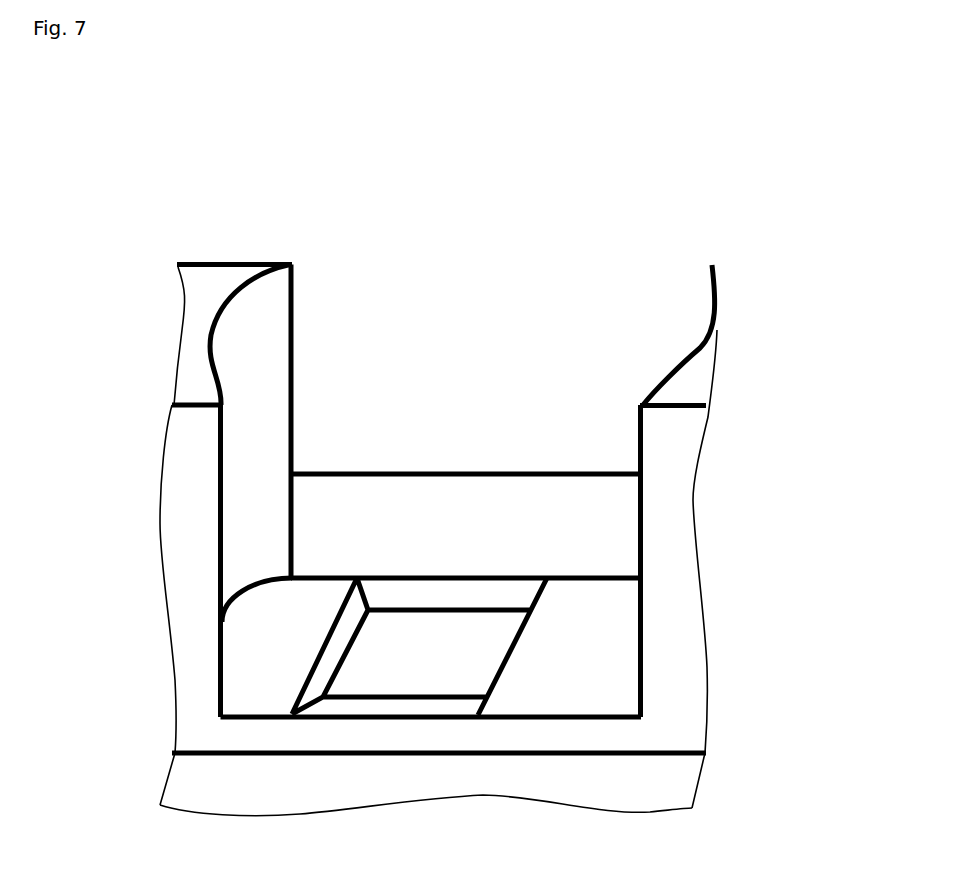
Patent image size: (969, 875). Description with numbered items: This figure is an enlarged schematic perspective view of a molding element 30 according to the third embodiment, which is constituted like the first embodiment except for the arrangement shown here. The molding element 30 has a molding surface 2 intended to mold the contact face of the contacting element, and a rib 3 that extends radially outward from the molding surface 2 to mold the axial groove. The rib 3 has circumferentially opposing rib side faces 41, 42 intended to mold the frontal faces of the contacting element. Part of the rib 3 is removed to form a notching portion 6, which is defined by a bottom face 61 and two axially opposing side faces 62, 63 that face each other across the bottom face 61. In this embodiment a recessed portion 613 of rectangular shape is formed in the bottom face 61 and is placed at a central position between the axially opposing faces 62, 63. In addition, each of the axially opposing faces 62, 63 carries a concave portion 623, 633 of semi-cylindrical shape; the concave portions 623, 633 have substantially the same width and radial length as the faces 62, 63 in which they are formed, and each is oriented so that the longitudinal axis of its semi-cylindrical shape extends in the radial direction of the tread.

The molding element 30 is at (339, 204).
The rib side face 42 is at (212, 262).
The concave portion 623 is at (228, 352).
The axially opposing side face 62 is at (270, 547).
The notching portion 6 is at (512, 355).
The axially opposing side face 63 is at (636, 467).
The concave portion 633 is at (696, 358).
The rib 3 is at (700, 378).
The bottom face 61 is at (299, 597).
The recessed portion 613 is at (427, 683).
The molding surface 2 is at (473, 548).
The rib side face 41 is at (193, 570).